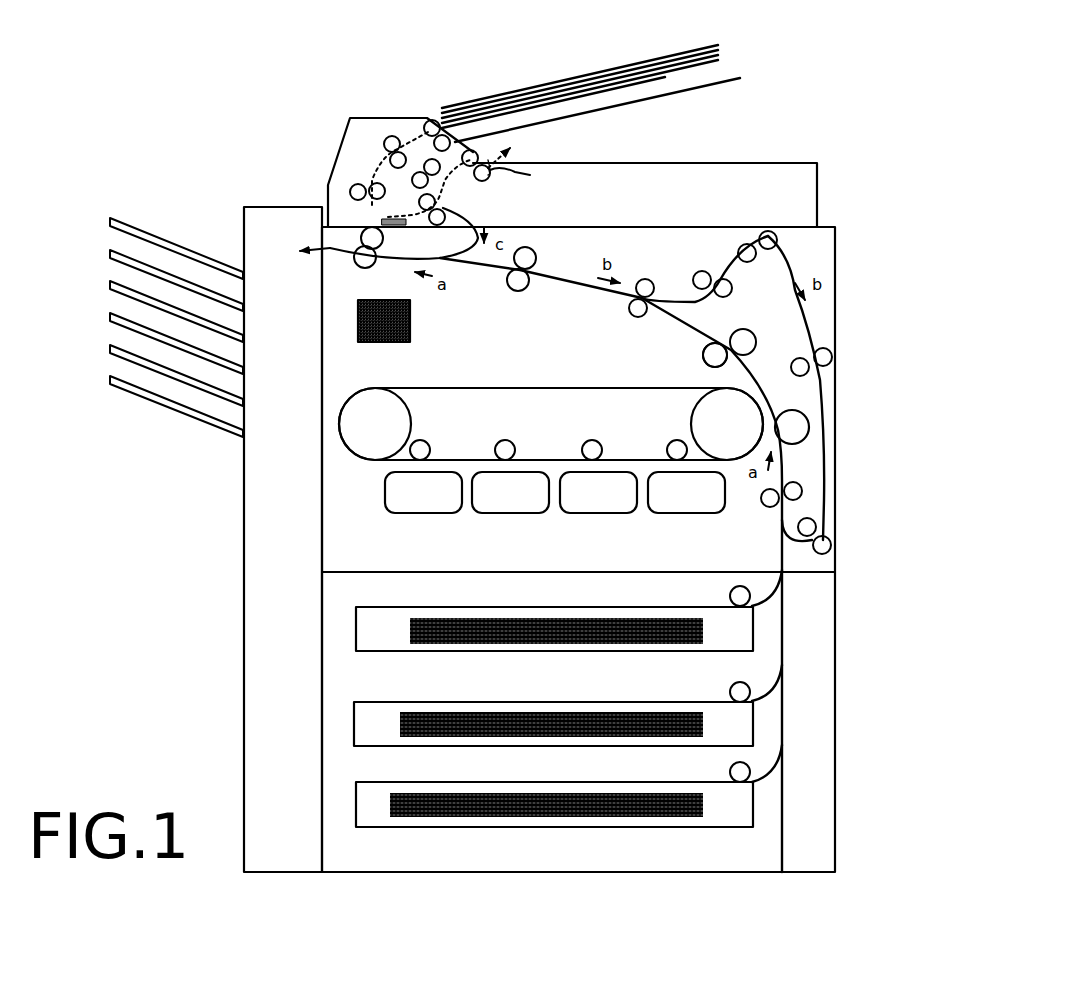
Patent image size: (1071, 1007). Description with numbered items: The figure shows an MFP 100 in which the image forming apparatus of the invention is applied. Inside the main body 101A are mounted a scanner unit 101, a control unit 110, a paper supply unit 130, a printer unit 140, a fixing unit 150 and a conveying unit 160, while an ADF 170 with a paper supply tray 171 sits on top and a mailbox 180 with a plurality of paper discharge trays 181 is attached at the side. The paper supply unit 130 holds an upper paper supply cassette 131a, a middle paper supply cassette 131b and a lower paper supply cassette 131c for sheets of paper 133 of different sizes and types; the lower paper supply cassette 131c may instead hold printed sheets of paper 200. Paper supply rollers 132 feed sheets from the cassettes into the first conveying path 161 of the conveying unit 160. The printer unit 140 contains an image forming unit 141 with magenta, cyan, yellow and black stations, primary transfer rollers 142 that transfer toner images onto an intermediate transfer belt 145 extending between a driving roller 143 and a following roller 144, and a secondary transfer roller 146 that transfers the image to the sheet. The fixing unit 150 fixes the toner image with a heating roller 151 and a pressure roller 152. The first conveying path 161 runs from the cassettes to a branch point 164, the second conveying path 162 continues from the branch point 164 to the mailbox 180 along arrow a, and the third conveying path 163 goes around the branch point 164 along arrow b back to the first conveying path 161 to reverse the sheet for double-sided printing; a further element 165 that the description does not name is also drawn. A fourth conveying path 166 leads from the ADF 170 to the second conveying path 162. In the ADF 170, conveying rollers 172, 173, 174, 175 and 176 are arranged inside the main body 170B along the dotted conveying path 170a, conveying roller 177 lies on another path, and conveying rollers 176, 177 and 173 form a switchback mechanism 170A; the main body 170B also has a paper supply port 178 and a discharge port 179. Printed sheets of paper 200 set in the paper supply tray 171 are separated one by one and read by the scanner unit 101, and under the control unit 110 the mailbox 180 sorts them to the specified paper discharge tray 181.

The MFP 100 is at (797, 80).
The scanner unit 101 is at (378, 217).
The main body 101A is at (838, 227).
The control unit 110 is at (418, 323).
The paper supply unit 130 is at (643, 720).
The upper paper supply cassette 131a is at (356, 651).
The middle paper supply cassette 131b is at (354, 746).
The lower paper supply cassette 131c is at (356, 827).
The paper supply roller 132 is at (736, 592).
The sheet of paper 133 is at (598, 710).
The printer unit 140 is at (645, 462).
The image forming unit 141 is at (725, 525).
The primary transfer roller 142 is at (682, 428).
The driving roller 143 is at (727, 424).
The following roller 144 is at (375, 424).
The intermediate transfer belt 145 is at (437, 392).
The secondary transfer roller 146 is at (835, 420).
The fixing unit 150 is at (700, 341).
The heating roller 151 is at (700, 366).
The pressure roller 152 is at (744, 334).
The conveying unit 160 is at (676, 275).
The first conveying path 161 is at (824, 676).
The second conveying path 162 is at (572, 268).
The third conveying path 163 is at (818, 318).
The branch point 164 is at (622, 302).
The conveyance rollers 165 is at (508, 279).
The fourth conveying path 166 is at (483, 221).
The ADF 170 is at (474, 100).
The switchback mechanism 170A is at (375, 145).
The conveying path 170a is at (372, 172).
The main body 170B is at (820, 159).
The paper supply tray 171 is at (610, 110).
The conveying roller 172 is at (424, 122).
The conveying roller 173 is at (384, 138).
The conveying roller 174 is at (350, 187).
The conveying roller 175 is at (438, 226).
The conveying roller 176 is at (490, 180).
The conveying roller 177 is at (438, 174).
The paper supply port 178 is at (482, 157).
The discharge port 179 is at (503, 172).
The mailbox 180 is at (260, 207).
The paper discharge tray 181 is at (88, 217).
The printed sheet of paper 200 is at (676, 62).